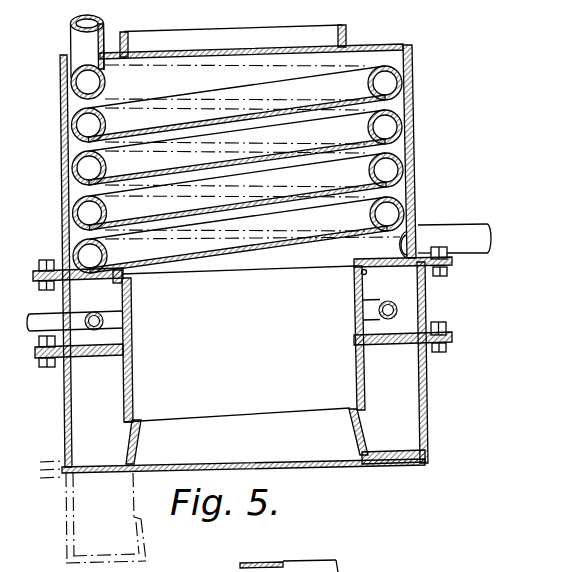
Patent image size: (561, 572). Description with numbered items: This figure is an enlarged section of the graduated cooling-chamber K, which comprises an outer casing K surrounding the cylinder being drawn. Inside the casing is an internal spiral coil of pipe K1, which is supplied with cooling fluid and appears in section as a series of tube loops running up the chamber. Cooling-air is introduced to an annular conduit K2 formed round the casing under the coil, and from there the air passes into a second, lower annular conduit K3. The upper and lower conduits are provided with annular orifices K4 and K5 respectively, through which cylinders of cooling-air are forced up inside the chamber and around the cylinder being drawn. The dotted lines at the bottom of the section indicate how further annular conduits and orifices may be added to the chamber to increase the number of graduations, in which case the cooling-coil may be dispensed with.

The cooling-chamber outer casing K is at (61, 129).
The spiral coil of pipe K1 is at (386, 170).
The annular conduit K2 is at (400, 290).
The second lower annular conduit K3 is at (433, 370).
The annular orifice K4 is at (100, 270).
The annular orifice K5 is at (93, 421).